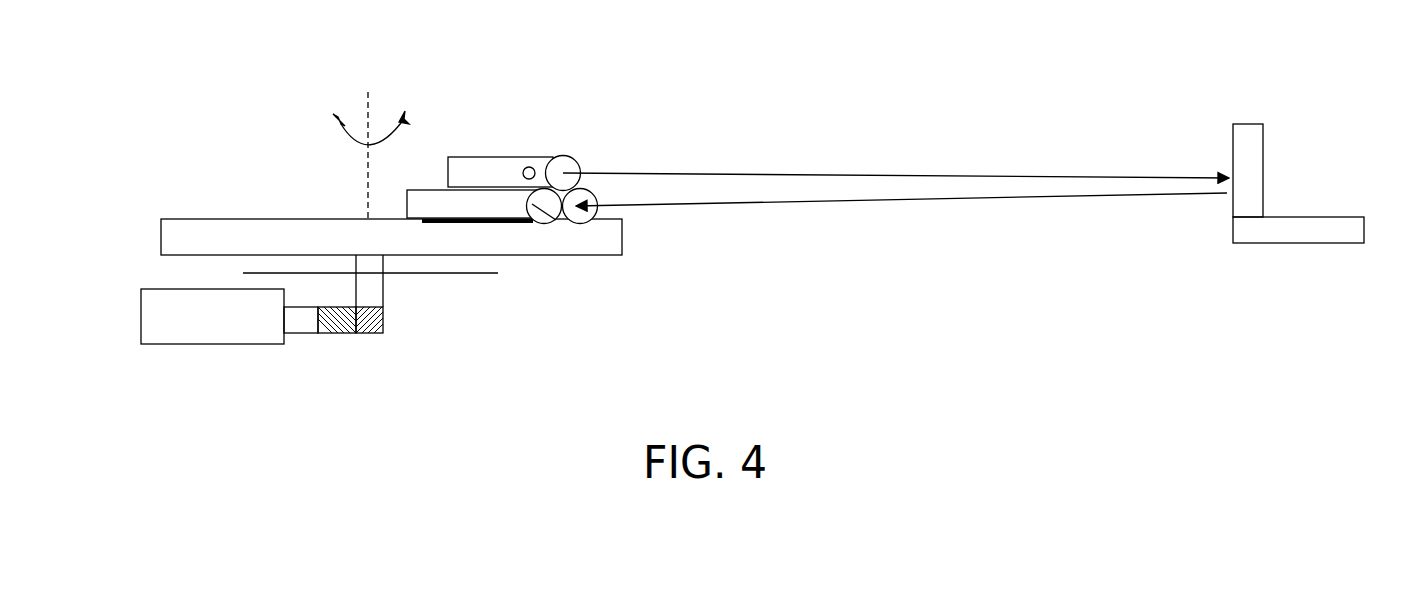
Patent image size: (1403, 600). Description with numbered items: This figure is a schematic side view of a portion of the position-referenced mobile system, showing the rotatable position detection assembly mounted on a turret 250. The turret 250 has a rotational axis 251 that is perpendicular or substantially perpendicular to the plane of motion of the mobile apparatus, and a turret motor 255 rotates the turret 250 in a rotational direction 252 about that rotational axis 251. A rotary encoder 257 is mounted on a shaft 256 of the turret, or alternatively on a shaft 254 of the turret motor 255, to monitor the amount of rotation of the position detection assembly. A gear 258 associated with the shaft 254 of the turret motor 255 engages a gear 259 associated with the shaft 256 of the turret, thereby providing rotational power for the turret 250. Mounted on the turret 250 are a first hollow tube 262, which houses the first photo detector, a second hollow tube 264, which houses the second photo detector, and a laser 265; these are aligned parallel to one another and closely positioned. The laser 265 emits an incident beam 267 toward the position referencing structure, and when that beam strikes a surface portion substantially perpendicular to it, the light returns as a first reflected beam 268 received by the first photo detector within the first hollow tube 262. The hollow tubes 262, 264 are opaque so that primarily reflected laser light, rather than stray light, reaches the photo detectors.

The turret 250 is at (207, 218).
The rotational axis 251 is at (365, 104).
The rotational direction 252 is at (403, 137).
The shaft of the turret motor 254 is at (298, 328).
The turret motor 255 is at (243, 344).
The shaft of the turret 256 is at (385, 290).
The rotary encoder 257 is at (480, 278).
The gear 258 is at (333, 334).
The gear 259 is at (385, 327).
The first hollow tube 262 is at (600, 215).
The second hollow tube 264 is at (560, 222).
The laser 265 is at (529, 167).
The incident beam 267 is at (843, 174).
The first reflected beam 268 is at (780, 199).